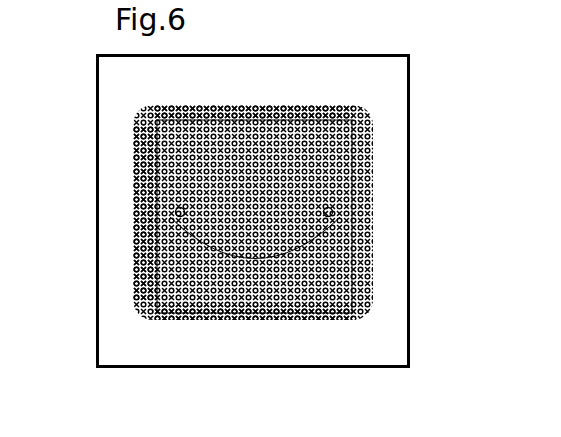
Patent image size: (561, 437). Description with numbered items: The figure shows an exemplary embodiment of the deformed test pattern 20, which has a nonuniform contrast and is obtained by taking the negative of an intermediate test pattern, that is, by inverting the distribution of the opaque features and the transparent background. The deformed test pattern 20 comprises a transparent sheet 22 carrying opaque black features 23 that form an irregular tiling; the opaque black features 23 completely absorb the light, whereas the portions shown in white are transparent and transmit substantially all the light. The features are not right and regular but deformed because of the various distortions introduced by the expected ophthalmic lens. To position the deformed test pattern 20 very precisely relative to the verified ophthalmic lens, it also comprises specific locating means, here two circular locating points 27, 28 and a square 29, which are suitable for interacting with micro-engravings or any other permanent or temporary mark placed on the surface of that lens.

The deformed test pattern 20 is at (422, 197).
The transparent sheet 22 is at (118, 342).
The opaque black features 23 is at (257, 320).
The circular locating point 27 is at (145, 201).
The circular locating point 28 is at (353, 245).
The square 29 is at (256, 117).